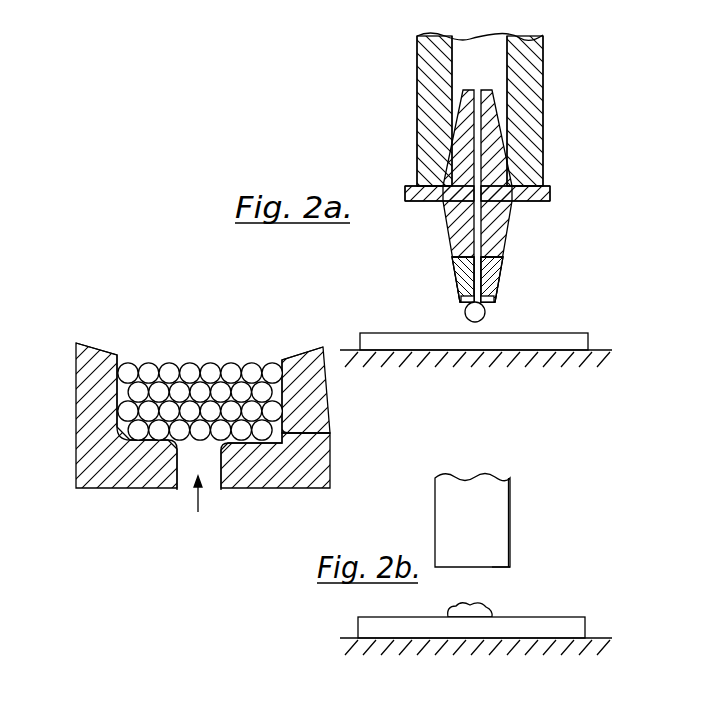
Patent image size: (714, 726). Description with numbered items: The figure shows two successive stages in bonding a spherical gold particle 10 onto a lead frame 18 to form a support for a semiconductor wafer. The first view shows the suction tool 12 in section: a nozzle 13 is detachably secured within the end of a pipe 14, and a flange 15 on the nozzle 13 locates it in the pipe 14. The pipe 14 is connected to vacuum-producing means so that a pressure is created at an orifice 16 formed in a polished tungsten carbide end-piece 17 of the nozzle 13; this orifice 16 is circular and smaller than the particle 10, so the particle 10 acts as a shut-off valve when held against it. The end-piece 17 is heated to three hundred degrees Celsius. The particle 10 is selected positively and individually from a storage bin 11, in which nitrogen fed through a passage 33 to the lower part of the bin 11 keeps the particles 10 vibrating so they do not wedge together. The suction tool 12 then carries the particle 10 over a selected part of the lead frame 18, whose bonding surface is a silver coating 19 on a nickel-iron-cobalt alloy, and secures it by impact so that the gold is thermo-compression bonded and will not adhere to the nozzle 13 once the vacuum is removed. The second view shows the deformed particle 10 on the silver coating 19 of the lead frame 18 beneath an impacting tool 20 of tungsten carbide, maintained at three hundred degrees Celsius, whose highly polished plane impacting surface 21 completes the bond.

In FIG. 2A, the spherical gold particle 10 is at (485, 312).
In FIG. 2B, the spherical gold particle 10 is at (208, 363).
In FIG. 2B, the storage bin 11 is at (290, 428).
In FIG. 2A, the suction tool 12 is at (551, 156).
In FIG. 2A, the nozzle 13 is at (500, 236).
In FIG. 2A, the pipe 14 is at (533, 80).
In FIG. 2A, the flange 15 is at (537, 202).
In FIG. 2A, the orifice 16 is at (462, 297).
In FIG. 2A, the end-piece 17 is at (493, 279).
In FIG. 2A, the lead frame 18 is at (556, 342).
In FIG. 2B, the lead frame 18 is at (585, 629).
In FIG. 2A, the silver coating 19 is at (449, 331).
In FIG. 2B, the silver coating 19 is at (540, 617).
In FIG. 2B, the impacting tool 20 is at (507, 512).
In FIG. 2B, the impacting surface 21 is at (492, 569).
In FIG. 2B, the passage 33 is at (218, 462).